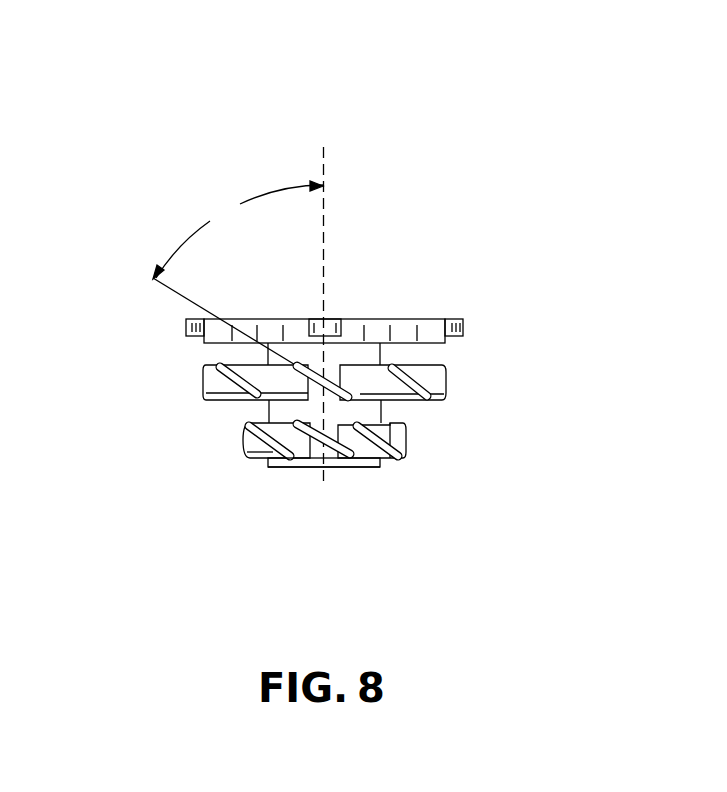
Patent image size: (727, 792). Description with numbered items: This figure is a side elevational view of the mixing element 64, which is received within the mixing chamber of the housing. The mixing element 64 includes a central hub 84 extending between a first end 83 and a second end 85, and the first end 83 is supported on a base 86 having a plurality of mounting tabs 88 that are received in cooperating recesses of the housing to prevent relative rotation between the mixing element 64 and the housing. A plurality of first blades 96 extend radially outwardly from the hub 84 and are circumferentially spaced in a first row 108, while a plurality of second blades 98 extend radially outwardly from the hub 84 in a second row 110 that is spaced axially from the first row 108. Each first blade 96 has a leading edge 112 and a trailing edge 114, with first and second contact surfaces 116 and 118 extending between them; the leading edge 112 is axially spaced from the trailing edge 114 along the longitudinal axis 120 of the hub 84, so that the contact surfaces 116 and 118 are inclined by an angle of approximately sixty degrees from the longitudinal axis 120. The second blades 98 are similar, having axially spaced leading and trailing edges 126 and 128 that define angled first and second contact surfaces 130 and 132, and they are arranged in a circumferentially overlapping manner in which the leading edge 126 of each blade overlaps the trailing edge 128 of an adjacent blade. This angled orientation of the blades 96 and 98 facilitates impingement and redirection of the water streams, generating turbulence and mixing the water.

The mixing element 64 is at (422, 168).
The first end 83 is at (309, 375).
The central hub 84 is at (280, 467).
The second end 85 is at (271, 467).
The base 86 is at (432, 319).
The mounting tabs 88 is at (186, 326).
The first blades 96 is at (300, 367).
The second blades 98 is at (390, 458).
The first row 108 is at (473, 375).
The second row 110 is at (442, 448).
The leading edge 112 is at (300, 351).
The trailing edge 114 is at (369, 378).
The first contact surface 116 is at (333, 385).
The second contact surface 118 is at (308, 398).
The longitudinal axis 120 is at (320, 157).
The leading edge 126 is at (245, 441).
The trailing edge 128 is at (357, 452).
The first contact surface 130 is at (380, 467).
The second contact surface 132 is at (330, 440).